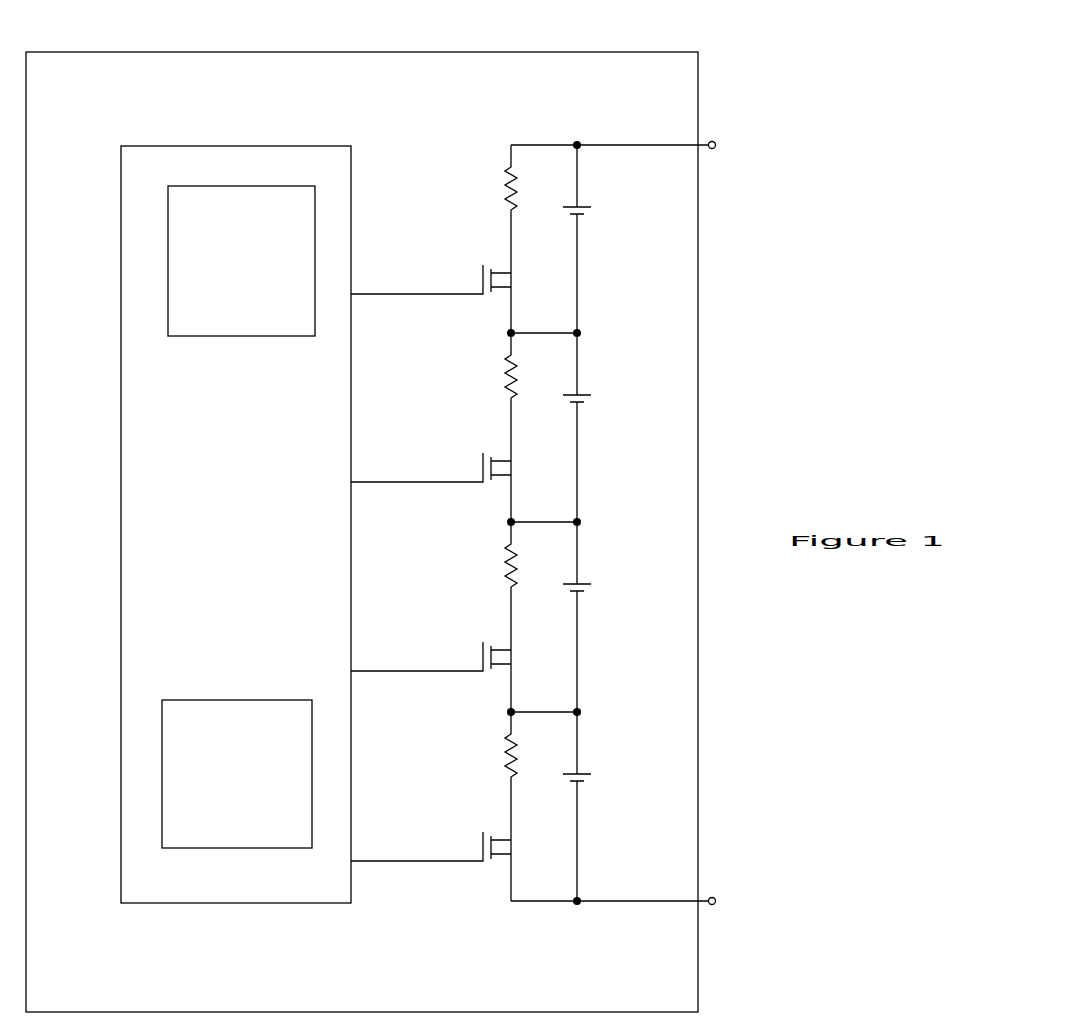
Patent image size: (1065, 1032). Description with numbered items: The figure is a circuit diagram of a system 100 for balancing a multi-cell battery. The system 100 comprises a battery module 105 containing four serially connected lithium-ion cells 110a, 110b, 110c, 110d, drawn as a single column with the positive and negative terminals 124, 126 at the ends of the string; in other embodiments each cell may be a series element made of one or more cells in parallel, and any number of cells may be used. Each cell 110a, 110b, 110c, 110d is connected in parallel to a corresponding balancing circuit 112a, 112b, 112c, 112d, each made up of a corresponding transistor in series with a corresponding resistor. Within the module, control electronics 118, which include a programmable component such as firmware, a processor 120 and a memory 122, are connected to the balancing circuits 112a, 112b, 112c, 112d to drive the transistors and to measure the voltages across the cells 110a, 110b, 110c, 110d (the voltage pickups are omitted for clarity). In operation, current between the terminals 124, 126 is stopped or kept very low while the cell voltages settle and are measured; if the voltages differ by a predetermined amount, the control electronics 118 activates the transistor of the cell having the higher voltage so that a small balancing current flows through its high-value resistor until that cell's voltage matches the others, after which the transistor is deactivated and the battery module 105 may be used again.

The system 100 is at (790, 332).
The battery module 105 is at (455, 51).
The control electronics 118 is at (121, 490).
The processor 120 is at (241, 261).
The memory 122 is at (237, 774).
The positive terminal 124 is at (638, 911).
The negative terminal 126 is at (636, 155).
The lithium-ion cell 110a is at (583, 792).
The lithium-ion cell 110b is at (583, 602).
The lithium-ion cell 110c is at (583, 413).
The lithium-ion cell 110d is at (583, 225).
The balancing circuit 112a is at (512, 742).
The balancing circuit 112b is at (512, 552).
The balancing circuit 112c is at (512, 363).
The balancing circuit 112d is at (512, 175).